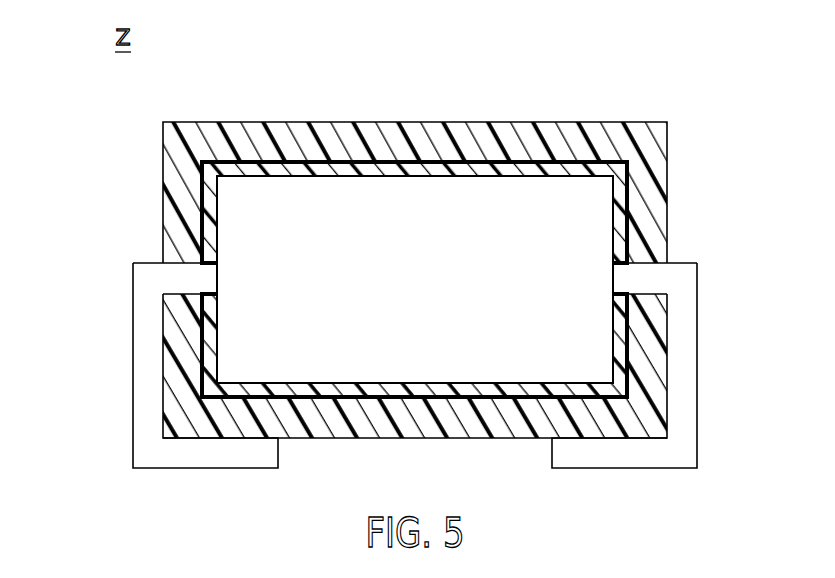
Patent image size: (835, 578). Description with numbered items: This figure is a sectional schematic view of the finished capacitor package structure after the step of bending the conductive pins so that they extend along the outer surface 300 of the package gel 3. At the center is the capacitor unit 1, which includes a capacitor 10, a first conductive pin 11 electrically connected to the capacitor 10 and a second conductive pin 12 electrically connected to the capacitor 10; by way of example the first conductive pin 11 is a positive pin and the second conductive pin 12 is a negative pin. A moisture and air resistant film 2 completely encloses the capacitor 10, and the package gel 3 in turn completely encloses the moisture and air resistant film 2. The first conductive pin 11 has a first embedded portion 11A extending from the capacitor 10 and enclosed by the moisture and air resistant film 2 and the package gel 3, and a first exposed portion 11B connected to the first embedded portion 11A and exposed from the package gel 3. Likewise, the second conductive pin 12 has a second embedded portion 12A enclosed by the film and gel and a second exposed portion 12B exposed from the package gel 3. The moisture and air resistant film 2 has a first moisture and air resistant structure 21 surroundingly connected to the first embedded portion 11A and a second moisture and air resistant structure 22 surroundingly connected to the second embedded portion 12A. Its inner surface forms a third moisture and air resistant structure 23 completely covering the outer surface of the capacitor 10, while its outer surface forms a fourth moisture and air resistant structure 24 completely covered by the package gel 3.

The capacitor unit 1 is at (126, 389).
The moisture and air resistant film 2 is at (429, 153).
The package gel 3 is at (503, 113).
The capacitor 10 is at (348, 198).
The first conductive pin 11 is at (57, 280).
The first embedded portion 11A is at (188, 280).
The first exposed portion 11B is at (150, 338).
The second conductive pin 12 is at (773, 280).
The second embedded portion 12A is at (640, 280).
The second exposed portion 12B is at (680, 338).
The first moisture and air resistant structure 21 is at (208, 256).
The second moisture and air resistant structure 22 is at (621, 256).
The third moisture and air resistant structure 23 is at (250, 150).
The fourth moisture and air resistant structure 24 is at (303, 170).
The outer surface 300 is at (547, 122).